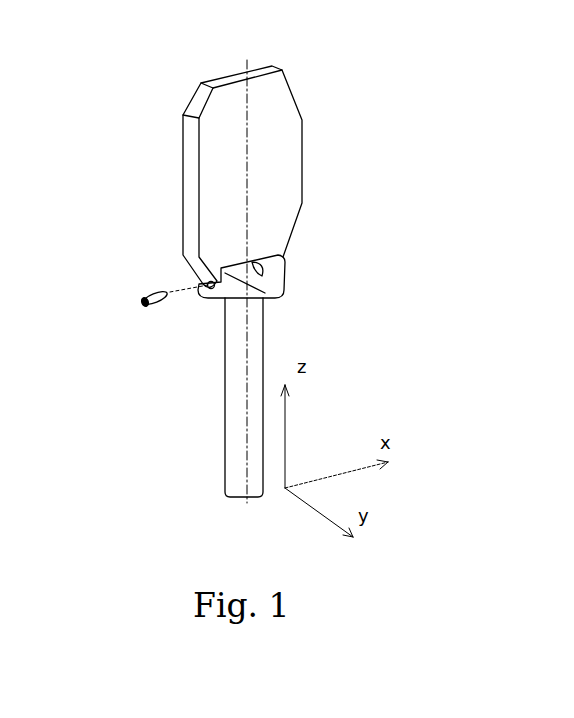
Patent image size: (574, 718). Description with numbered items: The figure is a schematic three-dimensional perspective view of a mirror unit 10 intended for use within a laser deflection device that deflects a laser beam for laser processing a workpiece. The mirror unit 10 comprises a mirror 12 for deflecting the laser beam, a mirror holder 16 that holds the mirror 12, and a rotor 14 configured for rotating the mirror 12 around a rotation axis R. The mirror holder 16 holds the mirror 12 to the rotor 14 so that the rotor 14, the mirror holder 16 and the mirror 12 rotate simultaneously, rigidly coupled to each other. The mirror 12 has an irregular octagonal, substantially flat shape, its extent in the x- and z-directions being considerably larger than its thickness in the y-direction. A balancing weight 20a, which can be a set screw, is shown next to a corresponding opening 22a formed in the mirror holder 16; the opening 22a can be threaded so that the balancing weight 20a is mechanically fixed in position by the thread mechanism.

The mirror unit 10 is at (183, 87).
The rotation axis R is at (255, 65).
The mirror 12 is at (193, 155).
The rotor 14 is at (235, 461).
The mirror holder 16 is at (273, 272).
The balancing weight 20a is at (157, 307).
The opening 22a is at (205, 295).